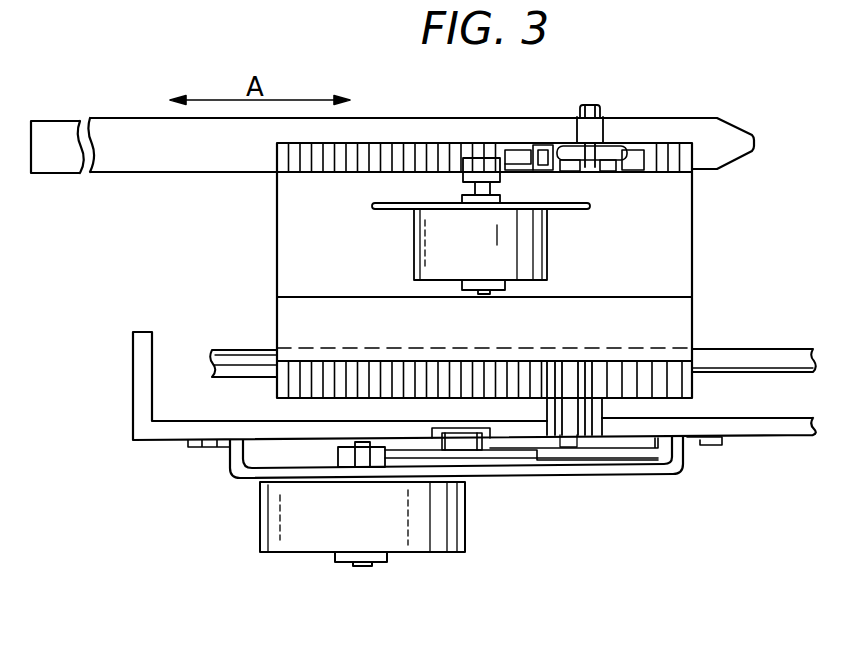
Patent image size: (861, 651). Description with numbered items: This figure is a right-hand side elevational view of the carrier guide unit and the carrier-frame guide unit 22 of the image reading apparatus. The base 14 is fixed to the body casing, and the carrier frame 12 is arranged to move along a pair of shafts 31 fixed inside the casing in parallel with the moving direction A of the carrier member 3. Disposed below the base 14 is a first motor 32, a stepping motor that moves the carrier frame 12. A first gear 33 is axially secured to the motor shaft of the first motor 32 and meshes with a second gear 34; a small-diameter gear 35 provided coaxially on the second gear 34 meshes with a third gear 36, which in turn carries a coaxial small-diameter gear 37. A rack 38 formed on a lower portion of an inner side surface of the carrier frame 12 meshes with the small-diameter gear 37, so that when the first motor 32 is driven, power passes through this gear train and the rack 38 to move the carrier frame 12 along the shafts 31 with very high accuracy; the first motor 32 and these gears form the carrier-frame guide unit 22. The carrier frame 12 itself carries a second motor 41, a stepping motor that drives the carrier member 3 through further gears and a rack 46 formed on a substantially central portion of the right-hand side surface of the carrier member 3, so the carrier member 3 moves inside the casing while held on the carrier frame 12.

The carrier member 3 is at (696, 126).
The carrier frame 12 is at (277, 262).
The base 14 is at (143, 403).
The carrier-frame guide unit 22 is at (568, 546).
The pair of shafts 31 is at (762, 355).
The first motor 32 is at (465, 535).
The first gear 33 is at (347, 450).
The second gear 34 is at (527, 453).
The small-diameter gear 35 is at (462, 442).
The third gear 36 is at (630, 442).
The small-diameter gear 37 is at (583, 415).
The rack 38 is at (657, 368).
The second motor 41 is at (542, 243).
The rack 46 is at (665, 143).